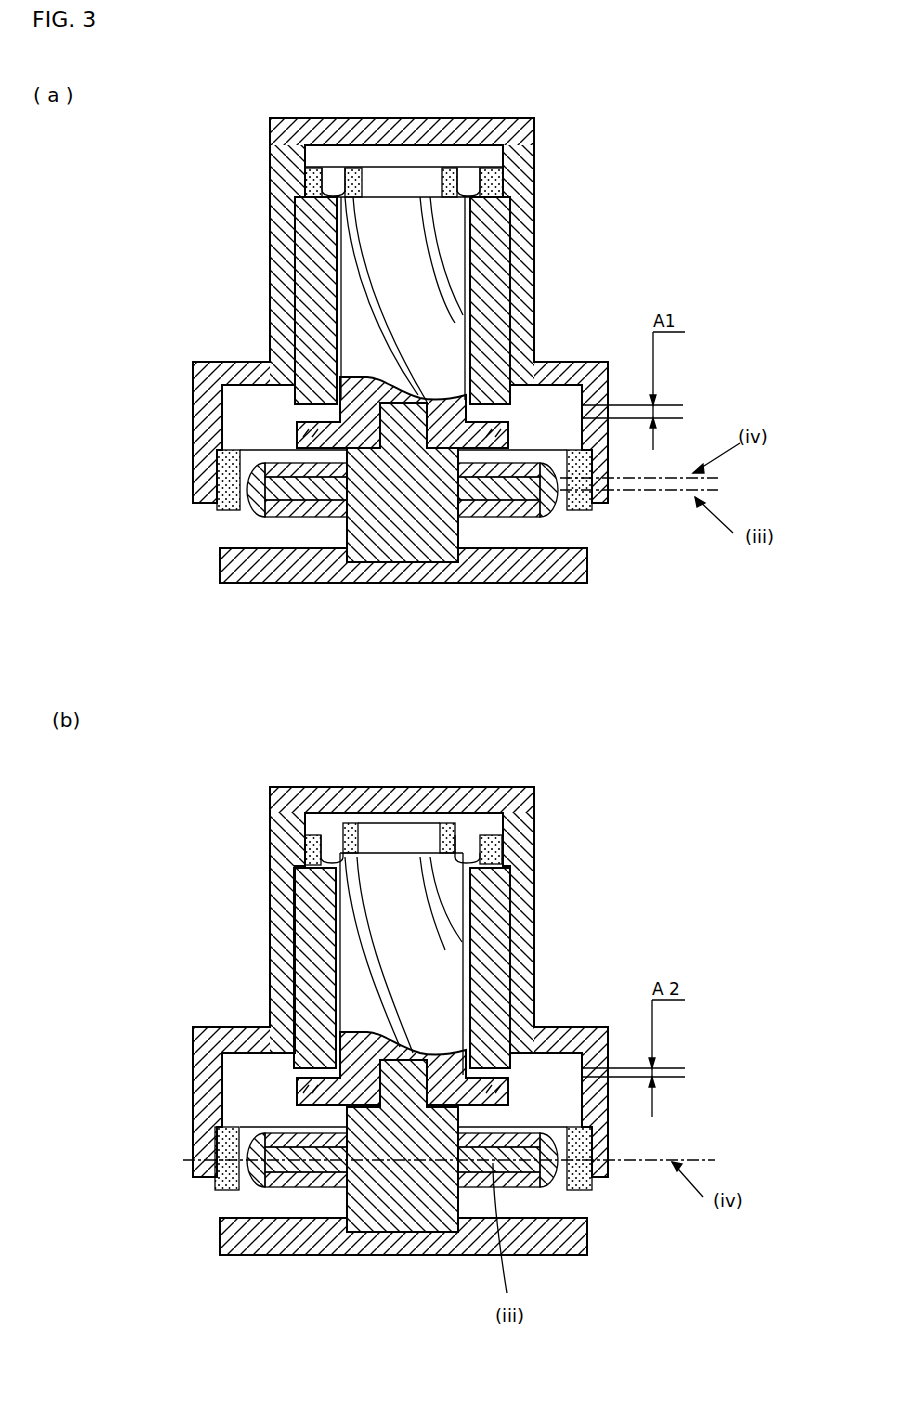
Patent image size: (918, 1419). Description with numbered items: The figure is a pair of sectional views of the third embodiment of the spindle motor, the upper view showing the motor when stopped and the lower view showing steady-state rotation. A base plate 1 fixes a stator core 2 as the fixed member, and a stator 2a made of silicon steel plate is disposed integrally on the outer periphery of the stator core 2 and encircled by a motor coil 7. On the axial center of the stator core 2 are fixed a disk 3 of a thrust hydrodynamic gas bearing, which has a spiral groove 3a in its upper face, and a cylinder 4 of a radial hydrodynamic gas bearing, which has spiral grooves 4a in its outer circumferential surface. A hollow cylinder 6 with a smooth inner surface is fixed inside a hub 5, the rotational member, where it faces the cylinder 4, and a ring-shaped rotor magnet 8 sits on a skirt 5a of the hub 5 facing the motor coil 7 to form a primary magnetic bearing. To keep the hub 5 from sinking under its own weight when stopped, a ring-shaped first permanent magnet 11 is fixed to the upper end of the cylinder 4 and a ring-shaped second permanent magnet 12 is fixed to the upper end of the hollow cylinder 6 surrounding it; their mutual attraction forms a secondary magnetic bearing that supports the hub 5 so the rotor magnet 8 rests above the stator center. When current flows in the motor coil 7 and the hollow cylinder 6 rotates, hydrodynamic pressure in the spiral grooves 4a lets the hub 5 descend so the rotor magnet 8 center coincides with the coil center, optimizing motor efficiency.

The base plate 1 is at (343, 578).
The stator core 2 is at (433, 553).
The stator 2a is at (260, 505).
The disk 3 is at (510, 436).
The spiral groove 3a is at (305, 420).
The cylinder 4 is at (402, 222).
The spiral grooves 4a is at (443, 273).
The hub 5 is at (533, 150).
The skirt 5a is at (207, 500).
The hollow cylinder 6 is at (307, 240).
The motor coil 7 is at (300, 468).
The rotor magnet 8 is at (220, 483).
The first permanent magnet 11 is at (450, 177).
The second permanent magnet 12 is at (312, 182).